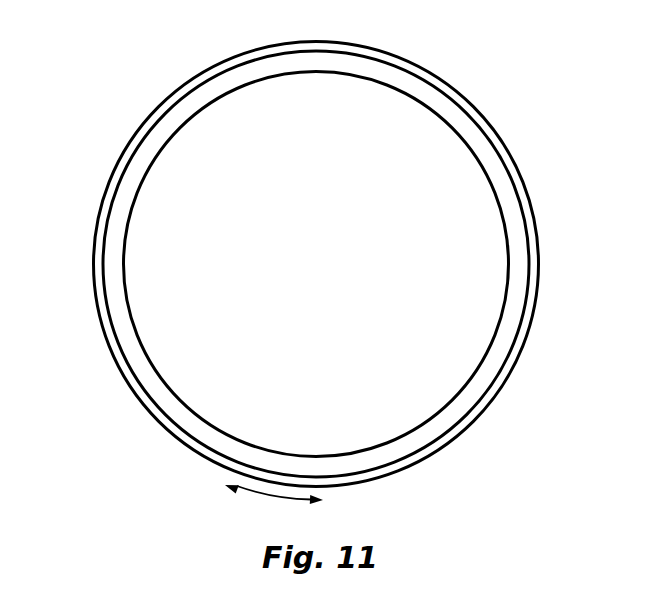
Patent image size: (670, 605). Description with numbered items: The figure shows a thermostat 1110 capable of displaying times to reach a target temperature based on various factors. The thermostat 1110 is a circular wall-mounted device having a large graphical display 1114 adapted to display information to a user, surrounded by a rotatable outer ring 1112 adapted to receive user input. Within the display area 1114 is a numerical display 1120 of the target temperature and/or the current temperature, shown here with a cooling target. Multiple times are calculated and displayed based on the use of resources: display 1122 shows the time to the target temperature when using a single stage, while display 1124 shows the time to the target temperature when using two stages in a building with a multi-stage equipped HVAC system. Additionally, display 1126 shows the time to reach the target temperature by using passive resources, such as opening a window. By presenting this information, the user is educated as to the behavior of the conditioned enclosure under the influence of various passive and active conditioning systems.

The thermostat 1110 is at (167, 53).
The rotatable outer ring 1112 is at (207, 447).
The graphical display 1114 is at (407, 422).
The numerical display 1120 is at (260, 176).
The display 1122 is at (166, 294).
The display 1124 is at (458, 289).
The display 1126 is at (252, 398).